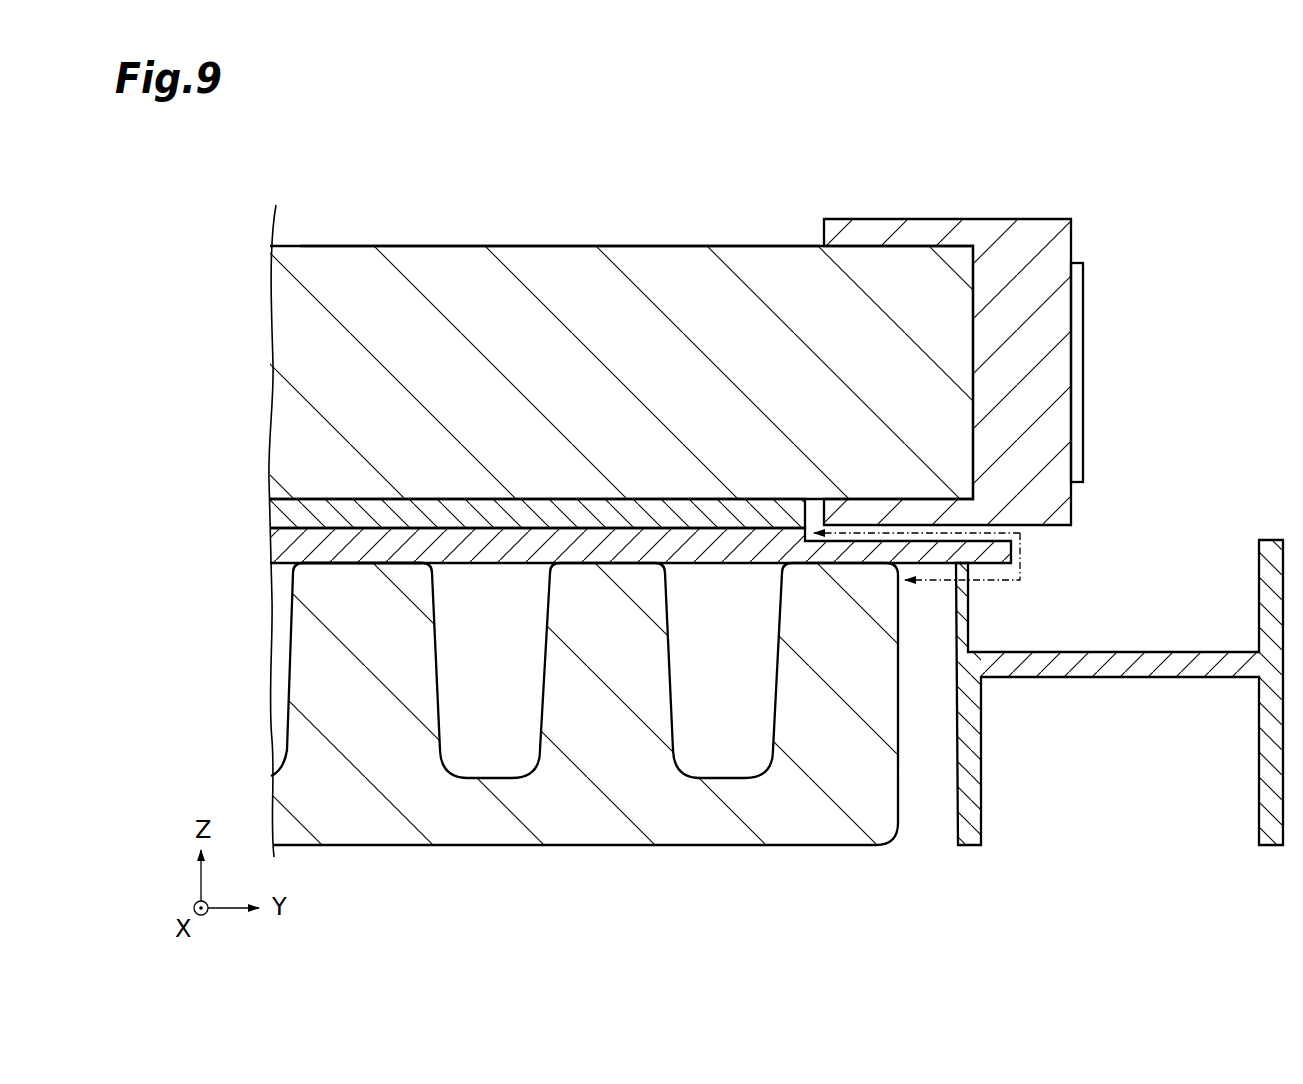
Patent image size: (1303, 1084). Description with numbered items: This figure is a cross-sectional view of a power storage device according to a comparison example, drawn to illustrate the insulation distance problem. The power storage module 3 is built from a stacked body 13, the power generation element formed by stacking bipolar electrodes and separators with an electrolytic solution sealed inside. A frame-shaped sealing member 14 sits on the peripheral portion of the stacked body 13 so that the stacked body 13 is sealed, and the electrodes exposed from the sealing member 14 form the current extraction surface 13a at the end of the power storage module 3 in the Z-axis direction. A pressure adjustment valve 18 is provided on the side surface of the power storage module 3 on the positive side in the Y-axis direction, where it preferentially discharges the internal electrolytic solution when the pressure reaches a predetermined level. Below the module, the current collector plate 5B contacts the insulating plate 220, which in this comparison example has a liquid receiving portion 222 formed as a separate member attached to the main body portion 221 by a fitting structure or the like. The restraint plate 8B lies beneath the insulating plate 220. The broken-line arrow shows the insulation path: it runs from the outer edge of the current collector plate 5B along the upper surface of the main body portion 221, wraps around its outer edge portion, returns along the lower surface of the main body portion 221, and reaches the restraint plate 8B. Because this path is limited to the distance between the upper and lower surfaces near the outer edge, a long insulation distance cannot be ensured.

The power storage module 3 is at (264, 300).
The current collector plate 5B is at (266, 512).
The restraint plate 8B is at (797, 850).
The stacked body 13 is at (720, 238).
The current extraction surface 13a is at (557, 244).
The sealing member 14 is at (989, 214).
The pressure adjustment valve 18 is at (1084, 328).
The insulating plate 220 is at (260, 545).
The main body portion 221 is at (345, 570).
The liquid receiving portion 222 is at (1203, 556).